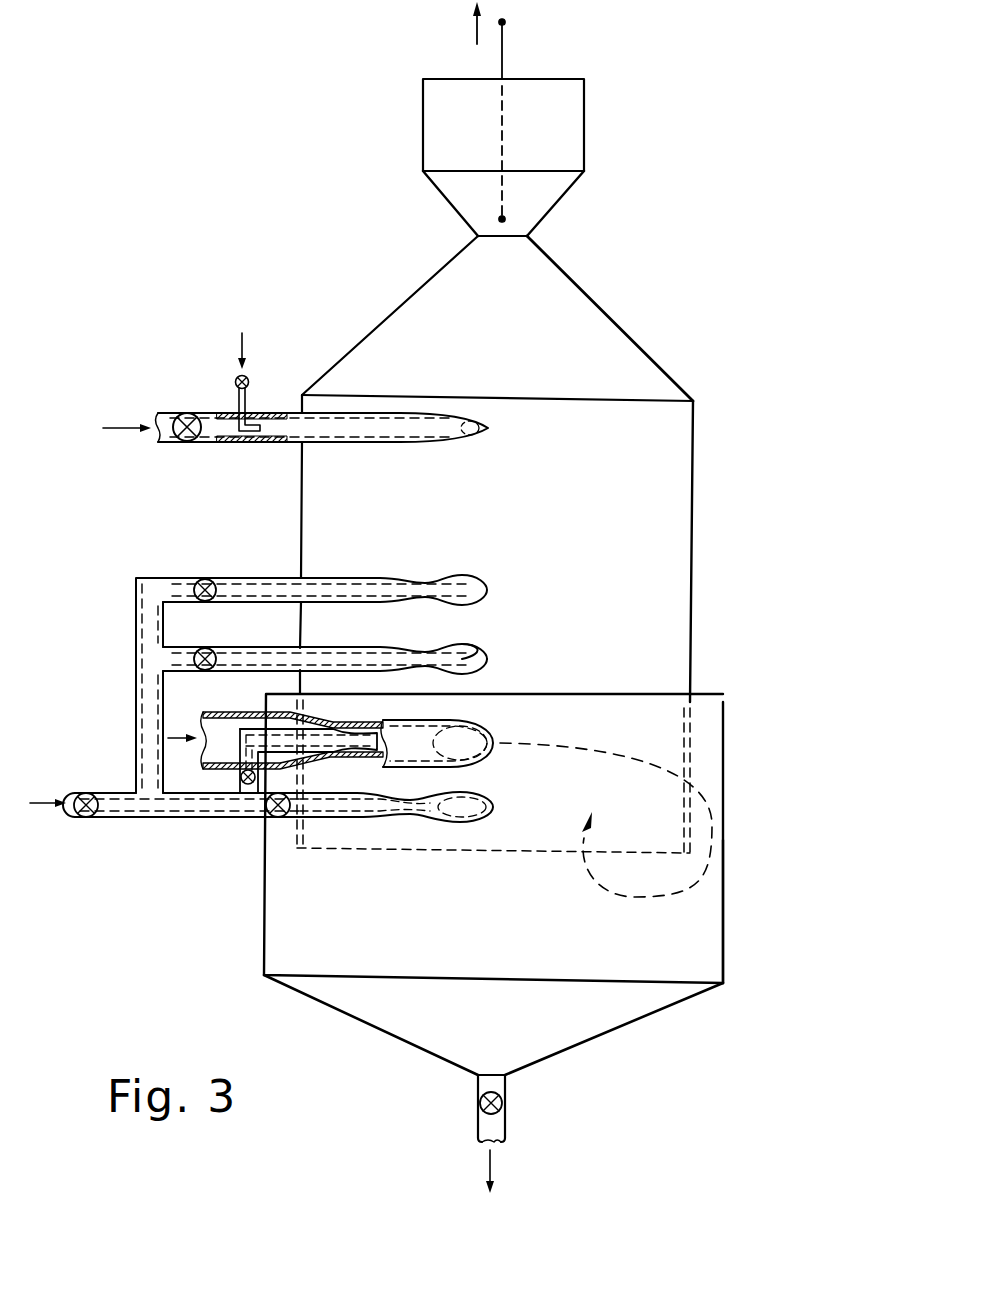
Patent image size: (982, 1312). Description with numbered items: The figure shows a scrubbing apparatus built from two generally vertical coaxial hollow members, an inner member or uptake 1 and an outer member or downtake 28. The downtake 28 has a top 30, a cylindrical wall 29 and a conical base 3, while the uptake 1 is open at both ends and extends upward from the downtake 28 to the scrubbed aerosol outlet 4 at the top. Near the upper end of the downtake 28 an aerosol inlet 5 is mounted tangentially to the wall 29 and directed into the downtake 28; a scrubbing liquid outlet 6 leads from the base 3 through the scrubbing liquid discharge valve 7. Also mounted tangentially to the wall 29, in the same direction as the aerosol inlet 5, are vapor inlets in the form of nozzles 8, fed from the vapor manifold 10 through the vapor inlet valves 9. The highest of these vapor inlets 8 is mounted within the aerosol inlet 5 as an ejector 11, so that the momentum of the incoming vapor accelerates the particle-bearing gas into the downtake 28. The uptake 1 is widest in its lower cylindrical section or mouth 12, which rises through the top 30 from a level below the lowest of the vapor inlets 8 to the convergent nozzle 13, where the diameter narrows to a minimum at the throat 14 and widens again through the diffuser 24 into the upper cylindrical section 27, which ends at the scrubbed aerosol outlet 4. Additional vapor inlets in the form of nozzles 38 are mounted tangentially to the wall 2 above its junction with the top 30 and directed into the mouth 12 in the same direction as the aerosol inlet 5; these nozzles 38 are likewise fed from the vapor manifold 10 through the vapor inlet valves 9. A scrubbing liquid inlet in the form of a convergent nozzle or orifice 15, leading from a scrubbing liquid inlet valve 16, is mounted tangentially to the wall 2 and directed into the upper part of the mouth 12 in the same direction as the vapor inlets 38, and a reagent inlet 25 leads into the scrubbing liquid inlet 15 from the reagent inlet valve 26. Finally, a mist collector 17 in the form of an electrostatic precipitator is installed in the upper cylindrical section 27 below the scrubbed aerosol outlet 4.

The inner member or uptake 1 is at (533, 469).
The wall 2 is at (692, 558).
The conical base 3 is at (613, 1033).
The scrubbed aerosol outlet 4 is at (535, 119).
The aerosol inlet 5 is at (213, 730).
The scrubbing liquid outlet 6 is at (497, 1082).
The scrubbing liquid discharge valve 7 is at (480, 1104).
The vapor inlets (nozzles) 8 is at (457, 813).
The vapor inlet valves 9 is at (206, 647).
The vapor manifold 10 is at (111, 800).
The ejector 11 is at (315, 758).
The lower cylindrical section or mouth 12 is at (643, 500).
The convergent nozzle 13 is at (613, 330).
The throat 14 is at (509, 239).
The scrubbing liquid inlet (convergent nozzle or orifice) 15 is at (295, 423).
The scrubbing liquid inlet valve 16 is at (183, 443).
The mist collector 17 is at (504, 55).
The diffuser 24 is at (540, 206).
The reagent inlet 25 is at (262, 427).
The reagent inlet valve 26 is at (237, 377).
The upper cylindrical section 27 is at (573, 135).
The outer member or downtake 28 is at (707, 765).
The cylindrical wall 29 is at (725, 890).
The top 30 is at (698, 700).
The additional vapor inlets (nozzles) 38 is at (481, 658).